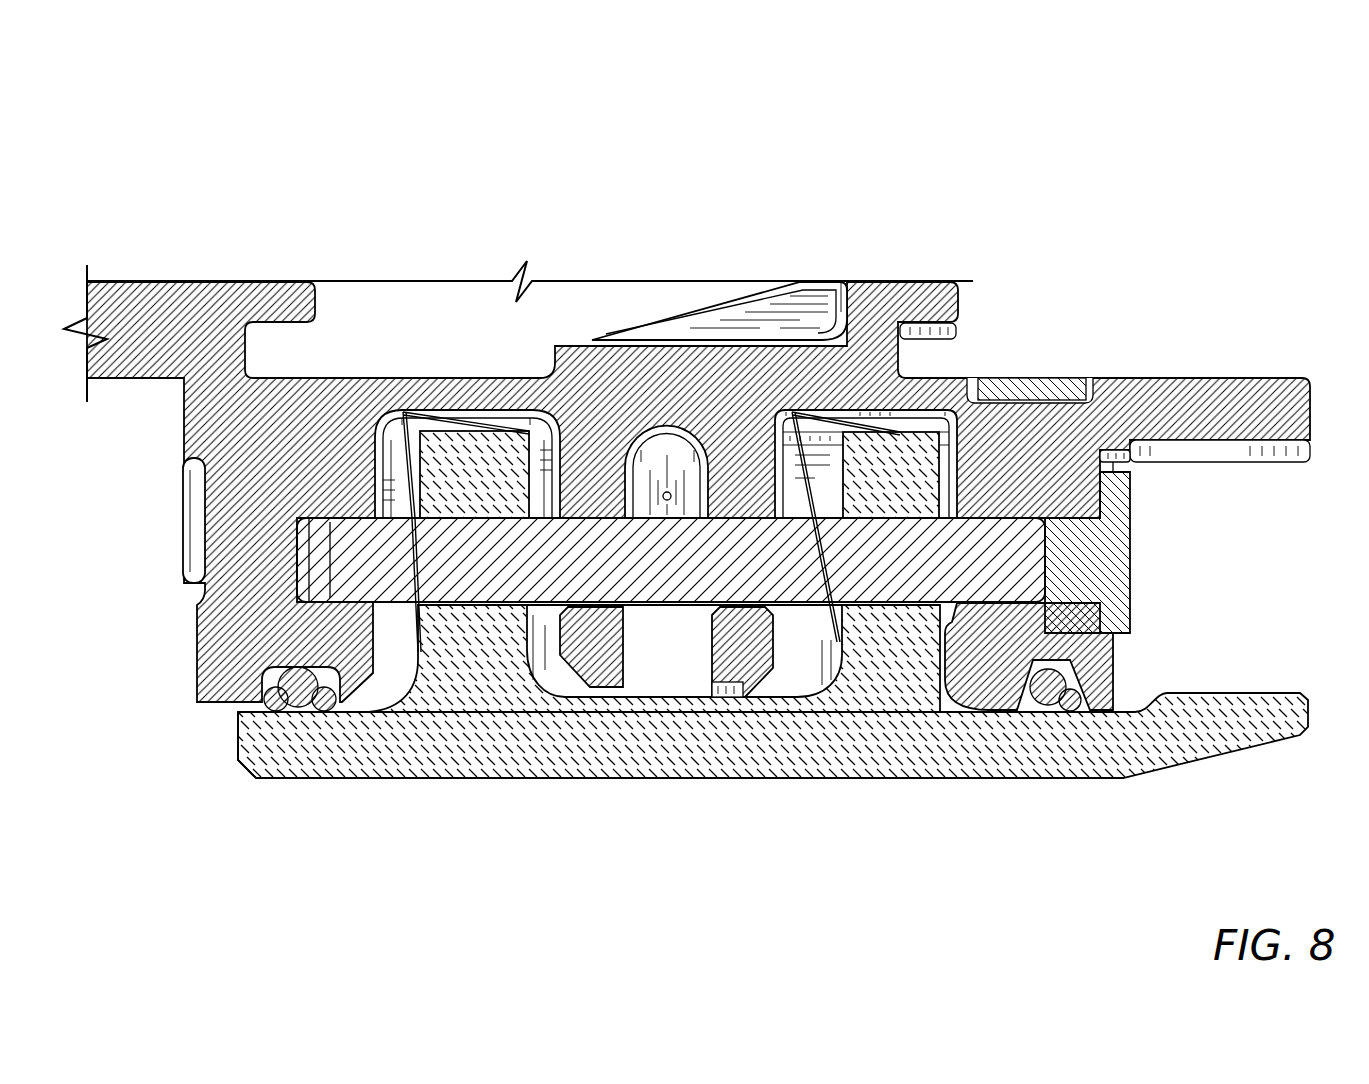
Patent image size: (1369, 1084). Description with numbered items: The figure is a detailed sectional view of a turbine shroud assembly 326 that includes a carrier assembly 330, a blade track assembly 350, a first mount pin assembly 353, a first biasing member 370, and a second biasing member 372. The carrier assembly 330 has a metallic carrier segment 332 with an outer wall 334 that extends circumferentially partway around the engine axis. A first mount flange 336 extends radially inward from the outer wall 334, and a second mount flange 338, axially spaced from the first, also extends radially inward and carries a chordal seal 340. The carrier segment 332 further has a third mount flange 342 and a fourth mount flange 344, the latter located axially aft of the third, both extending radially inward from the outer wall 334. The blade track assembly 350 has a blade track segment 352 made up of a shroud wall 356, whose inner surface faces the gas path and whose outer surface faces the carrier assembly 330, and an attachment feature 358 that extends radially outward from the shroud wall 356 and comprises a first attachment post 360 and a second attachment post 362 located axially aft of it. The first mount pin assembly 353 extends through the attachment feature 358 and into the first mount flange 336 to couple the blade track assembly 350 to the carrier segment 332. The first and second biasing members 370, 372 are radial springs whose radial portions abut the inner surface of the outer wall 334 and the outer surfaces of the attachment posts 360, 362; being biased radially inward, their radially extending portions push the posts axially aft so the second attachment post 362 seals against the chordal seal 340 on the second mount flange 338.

The turbine shroud assembly 326 is at (200, 160).
The carrier assembly 330 is at (1220, 357).
The carrier segment 332 is at (585, 343).
The outer wall 334 is at (255, 400).
The first mount flange 336 is at (255, 488).
The second mount flange 338 is at (1073, 470).
The chordal seal 340 is at (948, 640).
The third mount flange 342 is at (597, 640).
The fourth mount flange 344 is at (733, 647).
The blade track assembly 350 is at (240, 781).
The blade track segment 352 is at (650, 786).
The first mount pin assembly 353 is at (360, 567).
The shroud wall 356 is at (336, 737).
The attachment feature 358 is at (465, 700).
The first attachment post 360 is at (890, 472).
The second attachment post 362 is at (467, 447).
The first biasing member 370 is at (826, 626).
The second biasing member 372 is at (405, 630).